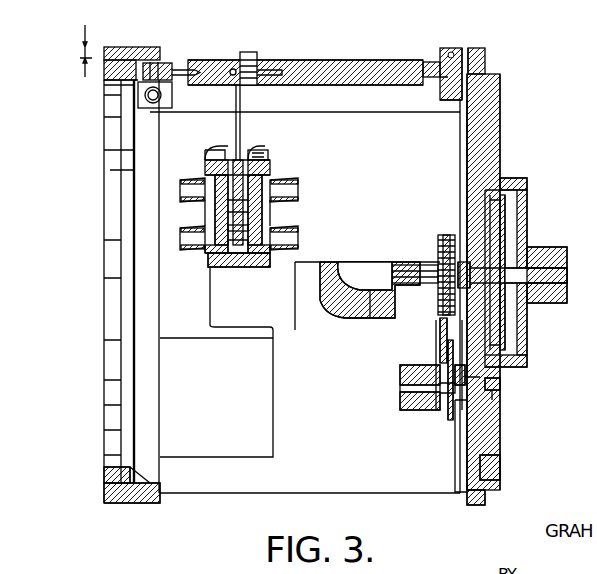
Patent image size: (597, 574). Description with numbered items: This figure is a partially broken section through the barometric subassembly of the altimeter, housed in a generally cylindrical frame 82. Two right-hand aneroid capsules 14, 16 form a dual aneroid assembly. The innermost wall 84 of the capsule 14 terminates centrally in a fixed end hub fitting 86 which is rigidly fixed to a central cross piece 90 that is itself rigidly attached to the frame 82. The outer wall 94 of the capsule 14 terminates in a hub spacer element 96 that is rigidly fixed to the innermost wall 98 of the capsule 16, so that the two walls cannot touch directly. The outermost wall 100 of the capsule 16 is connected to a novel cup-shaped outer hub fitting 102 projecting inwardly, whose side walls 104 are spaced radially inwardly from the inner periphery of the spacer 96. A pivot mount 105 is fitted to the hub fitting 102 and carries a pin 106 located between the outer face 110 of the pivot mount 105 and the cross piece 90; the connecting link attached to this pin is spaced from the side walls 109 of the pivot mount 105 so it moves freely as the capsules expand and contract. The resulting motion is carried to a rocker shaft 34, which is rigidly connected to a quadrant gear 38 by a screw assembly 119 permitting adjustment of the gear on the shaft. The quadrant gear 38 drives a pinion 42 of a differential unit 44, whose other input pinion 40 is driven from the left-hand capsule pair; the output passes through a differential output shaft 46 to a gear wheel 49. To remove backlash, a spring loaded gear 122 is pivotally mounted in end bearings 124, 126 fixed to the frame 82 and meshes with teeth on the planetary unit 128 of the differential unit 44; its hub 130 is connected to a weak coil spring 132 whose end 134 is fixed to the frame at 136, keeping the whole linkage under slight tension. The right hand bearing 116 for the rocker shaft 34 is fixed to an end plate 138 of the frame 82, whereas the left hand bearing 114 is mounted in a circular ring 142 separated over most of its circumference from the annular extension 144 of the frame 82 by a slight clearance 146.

The aneroid capsule 14 is at (292, 228).
The aneroid capsule 16 is at (296, 190).
The rocker shaft 34 is at (313, 63).
The quadrant gear 38 is at (478, 130).
The input pinion 40 is at (378, 305).
The pinion 42 is at (470, 270).
The differential unit 44 is at (445, 236).
The differential output shaft 46 is at (510, 270).
The gear wheel 49 is at (510, 330).
The frame 82 is at (165, 485).
The innermost wall 84 is at (190, 258).
The fixed end hub fitting 86 is at (254, 268).
The central cross piece 90 is at (365, 262).
The outer wall 94 is at (185, 228).
The hub spacer element 96 is at (182, 212).
The innermost wall 98 is at (296, 207).
The outermost wall 100 is at (180, 178).
The outer hub fitting 102 is at (280, 178).
The side walls 104 is at (290, 226).
The pivot mount 105 is at (270, 163).
The pin 106 is at (205, 283).
The side walls 109 is at (228, 158).
The outer face 110 is at (240, 165).
The left hand bearing 114 is at (175, 80).
The right hand bearing 116 is at (488, 62).
The screw assembly 119 is at (248, 52).
The spring loaded gear 122 is at (445, 450).
The end bearing 124 is at (410, 390).
The end bearing 126 is at (490, 380).
The planetary unit 128 is at (445, 322).
The hub 130 is at (495, 400).
The coil spring 132 is at (460, 423).
The end 134 is at (482, 448).
The fixing point 136 is at (455, 480).
The end plate 138 is at (490, 100).
The circular ring 142 is at (160, 53).
The annular extension 144 is at (137, 53).
The clearance 146 is at (80, 57).